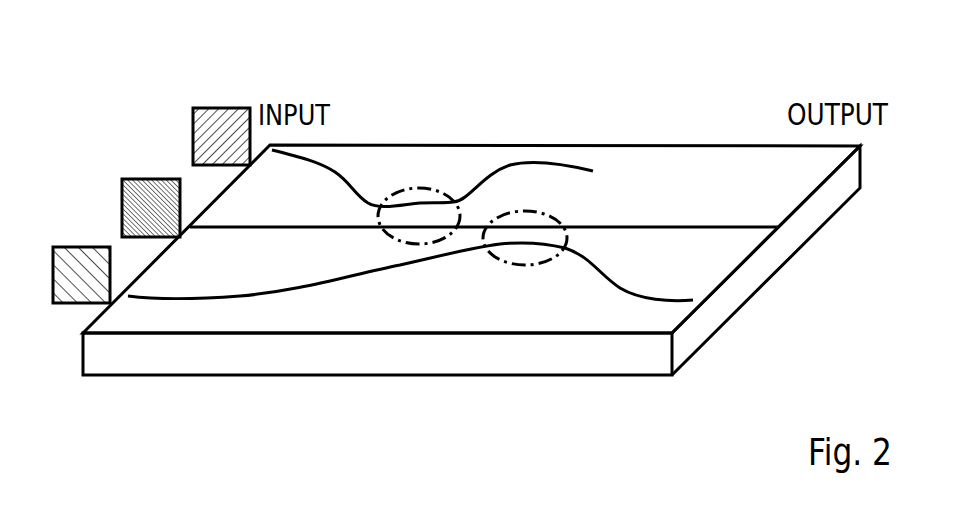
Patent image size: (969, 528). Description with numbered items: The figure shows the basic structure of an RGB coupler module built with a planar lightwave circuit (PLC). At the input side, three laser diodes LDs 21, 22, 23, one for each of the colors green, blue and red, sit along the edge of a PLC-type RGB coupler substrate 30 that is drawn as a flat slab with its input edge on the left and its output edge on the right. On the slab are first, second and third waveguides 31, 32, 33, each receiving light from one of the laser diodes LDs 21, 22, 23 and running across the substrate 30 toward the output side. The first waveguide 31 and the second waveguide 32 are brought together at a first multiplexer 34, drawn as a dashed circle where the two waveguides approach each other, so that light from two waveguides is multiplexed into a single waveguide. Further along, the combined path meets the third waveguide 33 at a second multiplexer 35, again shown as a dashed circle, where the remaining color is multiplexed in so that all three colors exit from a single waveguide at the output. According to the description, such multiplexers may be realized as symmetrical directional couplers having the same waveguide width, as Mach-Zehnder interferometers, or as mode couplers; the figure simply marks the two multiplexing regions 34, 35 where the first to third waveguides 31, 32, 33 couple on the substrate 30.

The LD 21 is at (222, 108).
The LD 22 is at (150, 179).
The LD 23 is at (80, 247).
The optical substrate / waveguide chip 30 is at (615, 143).
The first waveguide 31 is at (328, 170).
The second waveguide 32 is at (313, 227).
The third waveguide 33 is at (220, 298).
The first multiplexer 34 is at (413, 188).
The second multiplexer 35 is at (517, 262).